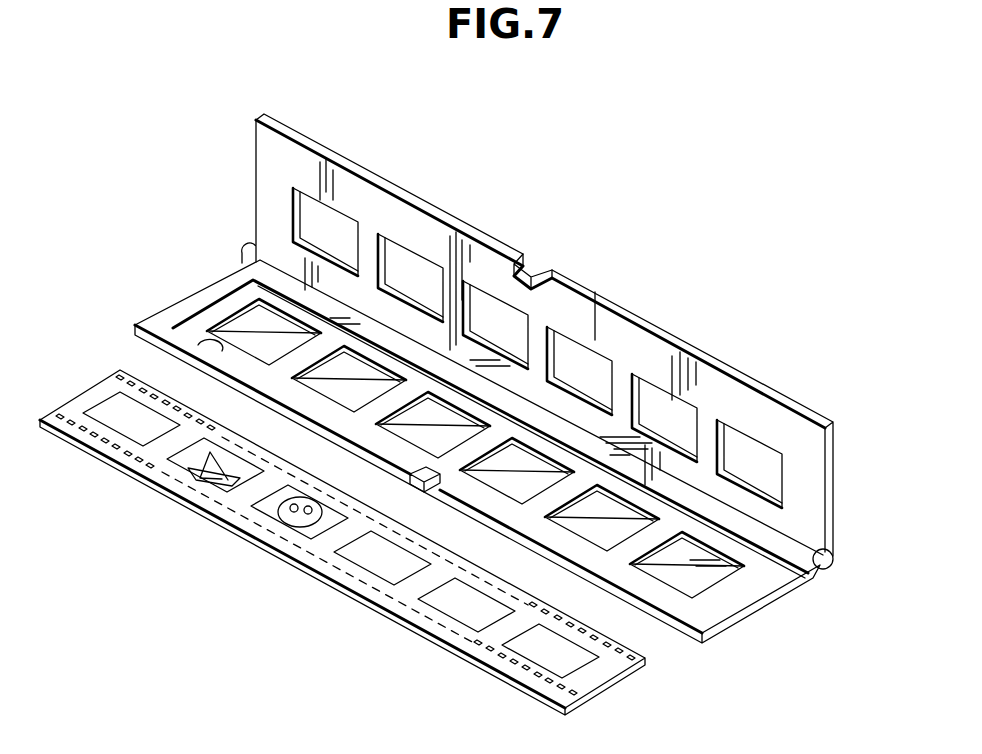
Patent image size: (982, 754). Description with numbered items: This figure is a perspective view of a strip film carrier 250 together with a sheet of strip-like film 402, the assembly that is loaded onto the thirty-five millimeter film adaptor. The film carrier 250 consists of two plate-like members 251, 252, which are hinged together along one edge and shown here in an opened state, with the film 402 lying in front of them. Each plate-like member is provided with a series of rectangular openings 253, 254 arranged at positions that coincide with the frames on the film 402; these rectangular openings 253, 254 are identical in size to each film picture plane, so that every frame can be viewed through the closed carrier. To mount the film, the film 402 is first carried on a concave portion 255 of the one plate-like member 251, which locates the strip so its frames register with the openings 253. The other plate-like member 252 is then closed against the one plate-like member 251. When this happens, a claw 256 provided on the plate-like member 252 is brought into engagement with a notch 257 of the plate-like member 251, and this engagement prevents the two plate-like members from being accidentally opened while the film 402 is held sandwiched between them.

The strip film carrier 250 is at (450, 401).
The plate-like member 251 is at (442, 442).
The plate-like member 252 is at (496, 339).
The rectangular openings 253 is at (245, 323).
The rectangular openings 254 is at (331, 209).
The concave portion 255 is at (220, 347).
The claw 256 is at (531, 272).
The notch 257 is at (427, 488).
The strip-like film 402 is at (265, 541).